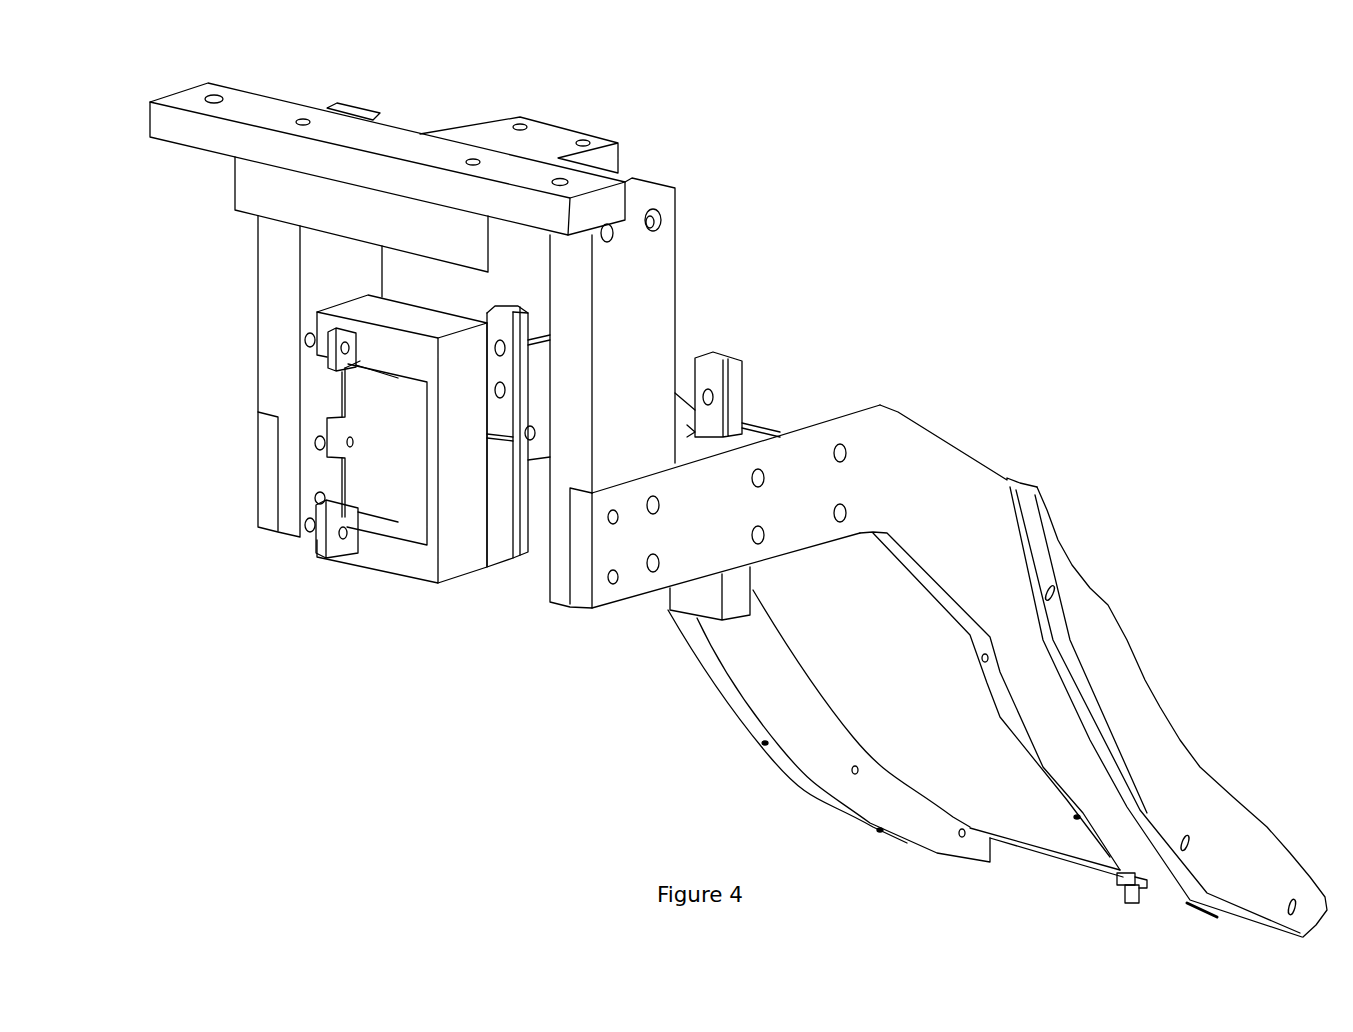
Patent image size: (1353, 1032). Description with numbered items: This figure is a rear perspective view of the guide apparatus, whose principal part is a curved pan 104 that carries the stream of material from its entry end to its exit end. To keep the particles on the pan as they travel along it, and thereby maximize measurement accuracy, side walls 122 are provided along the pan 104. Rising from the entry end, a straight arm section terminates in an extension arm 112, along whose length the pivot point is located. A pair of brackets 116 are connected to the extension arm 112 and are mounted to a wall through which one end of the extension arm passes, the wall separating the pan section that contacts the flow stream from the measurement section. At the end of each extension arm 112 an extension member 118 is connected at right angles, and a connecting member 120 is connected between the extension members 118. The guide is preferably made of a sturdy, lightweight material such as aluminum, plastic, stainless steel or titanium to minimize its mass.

The pan 104 is at (997, 671).
The extension arm 112 is at (685, 520).
The bracket 116 is at (712, 362).
The extension member 118 is at (277, 287).
The connecting member 120 is at (437, 135).
The side wall 122 is at (795, 743).